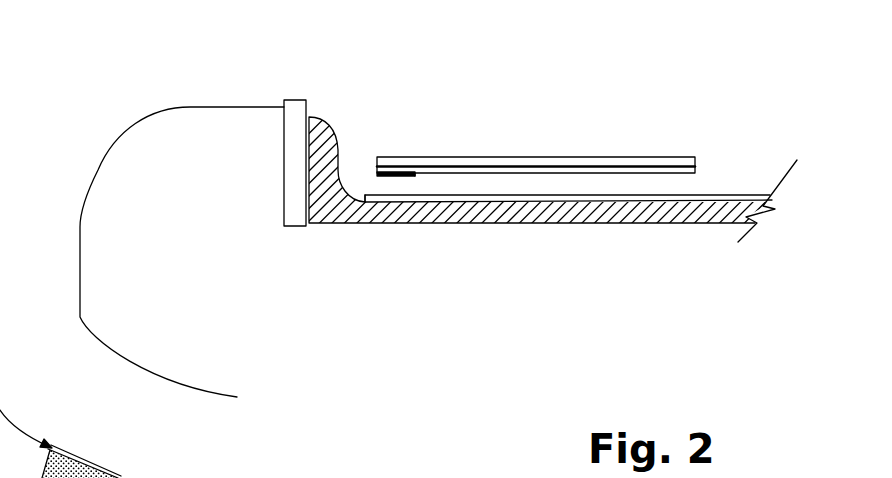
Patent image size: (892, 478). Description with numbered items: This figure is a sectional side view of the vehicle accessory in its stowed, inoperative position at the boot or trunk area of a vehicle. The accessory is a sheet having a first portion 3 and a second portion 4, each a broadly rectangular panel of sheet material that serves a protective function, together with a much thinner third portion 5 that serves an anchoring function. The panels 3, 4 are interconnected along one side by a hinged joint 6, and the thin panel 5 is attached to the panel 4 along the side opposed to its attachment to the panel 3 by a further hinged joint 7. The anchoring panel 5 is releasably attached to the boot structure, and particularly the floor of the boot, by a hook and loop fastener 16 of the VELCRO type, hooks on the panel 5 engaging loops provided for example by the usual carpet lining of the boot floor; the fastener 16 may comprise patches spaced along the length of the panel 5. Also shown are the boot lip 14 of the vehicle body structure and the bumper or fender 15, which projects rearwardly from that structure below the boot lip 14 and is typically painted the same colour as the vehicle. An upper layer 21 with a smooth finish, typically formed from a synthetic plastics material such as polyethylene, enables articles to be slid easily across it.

The first portion 3 is at (573, 158).
The second portion 4 is at (515, 174).
The third portion 5 is at (379, 180).
The hinged joint 6 is at (697, 162).
The hinged joint 7 is at (417, 175).
The boot lip 14 is at (298, 100).
The bumper or fender 15 is at (115, 145).
The hook and loop fastener 16 is at (395, 186).
The upper layer 21 is at (113, 477).